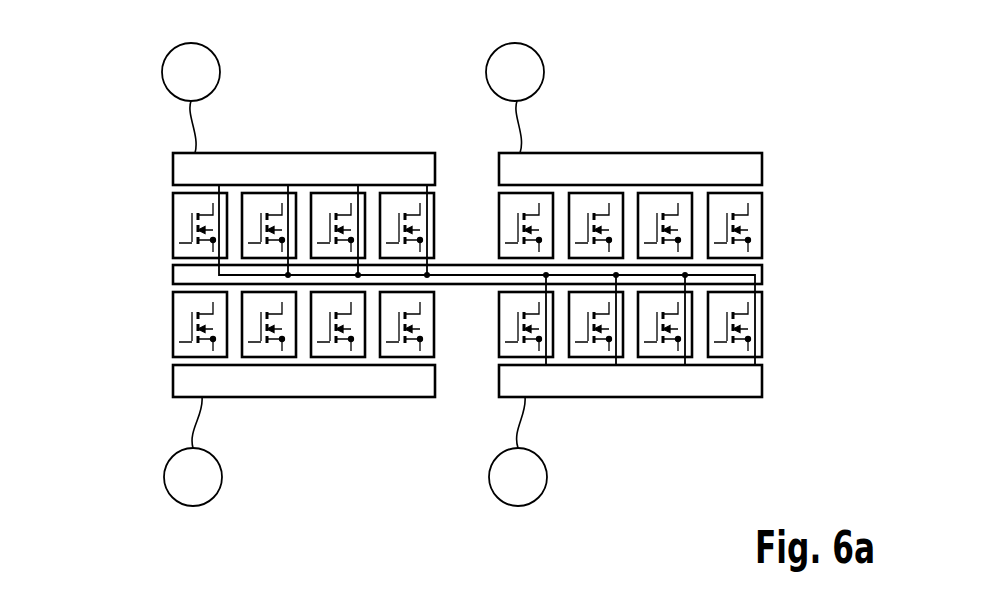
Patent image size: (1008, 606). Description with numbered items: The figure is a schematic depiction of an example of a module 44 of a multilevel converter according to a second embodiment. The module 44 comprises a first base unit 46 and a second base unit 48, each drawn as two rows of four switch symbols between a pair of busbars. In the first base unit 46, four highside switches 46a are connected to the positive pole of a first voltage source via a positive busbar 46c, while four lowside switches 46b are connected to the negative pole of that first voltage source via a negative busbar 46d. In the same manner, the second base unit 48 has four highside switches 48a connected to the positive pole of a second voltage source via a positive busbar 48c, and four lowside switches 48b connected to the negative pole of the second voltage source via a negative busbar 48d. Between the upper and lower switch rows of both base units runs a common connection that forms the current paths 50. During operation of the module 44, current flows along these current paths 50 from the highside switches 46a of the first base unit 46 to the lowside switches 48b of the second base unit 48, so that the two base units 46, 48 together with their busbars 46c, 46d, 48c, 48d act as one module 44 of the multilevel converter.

The module 44 is at (121, 158).
The first base unit 46 is at (298, 88).
The highside switches 46a is at (173, 230).
The lowside switches 46b is at (173, 328).
The positive busbar 46c is at (373, 165).
The negative busbar 46d is at (375, 387).
The second base unit 48 is at (618, 88).
The highside switches 48a is at (587, 193).
The lowside switches 48b is at (587, 357).
The positive busbar 48c is at (698, 165).
The negative busbar 48d is at (698, 387).
The current paths 50 is at (472, 279).